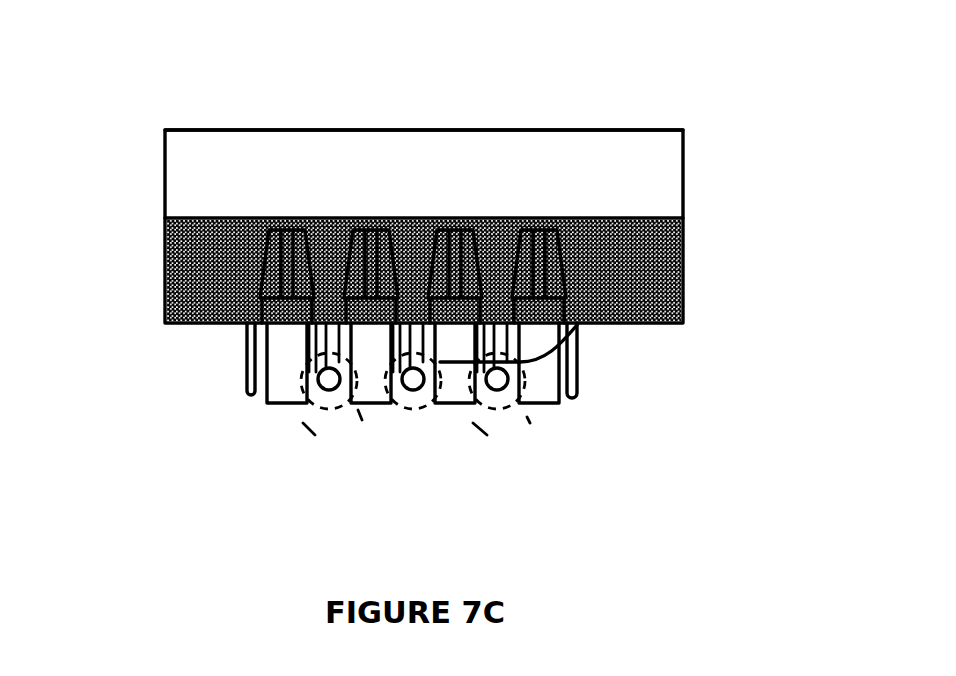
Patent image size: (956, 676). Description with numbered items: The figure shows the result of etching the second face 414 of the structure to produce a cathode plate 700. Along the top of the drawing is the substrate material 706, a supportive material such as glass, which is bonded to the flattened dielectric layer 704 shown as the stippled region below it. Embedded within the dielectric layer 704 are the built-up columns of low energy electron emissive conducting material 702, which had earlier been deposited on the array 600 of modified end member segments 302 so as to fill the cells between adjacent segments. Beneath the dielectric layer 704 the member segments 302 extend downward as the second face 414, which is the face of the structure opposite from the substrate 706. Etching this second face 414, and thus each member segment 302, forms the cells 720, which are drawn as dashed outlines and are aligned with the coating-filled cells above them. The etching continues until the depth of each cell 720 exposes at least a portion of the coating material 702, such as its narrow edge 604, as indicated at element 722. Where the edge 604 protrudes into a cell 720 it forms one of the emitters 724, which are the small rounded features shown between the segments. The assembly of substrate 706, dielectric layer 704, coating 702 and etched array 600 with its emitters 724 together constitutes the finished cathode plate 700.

The cathode plate 700 is at (702, 96).
The low energy electron emissive conducting material 702 is at (537, 222).
The dielectric layer 704 is at (203, 262).
The substrate material 706 is at (683, 172).
The element 722 is at (577, 325).
The array 600 is at (608, 383).
The cylindrical member segments 302 is at (280, 348).
The second face 414 is at (226, 416).
The emitters 724 is at (325, 395).
The cells 720 is at (347, 435).
The narrow edge 604 is at (407, 402).